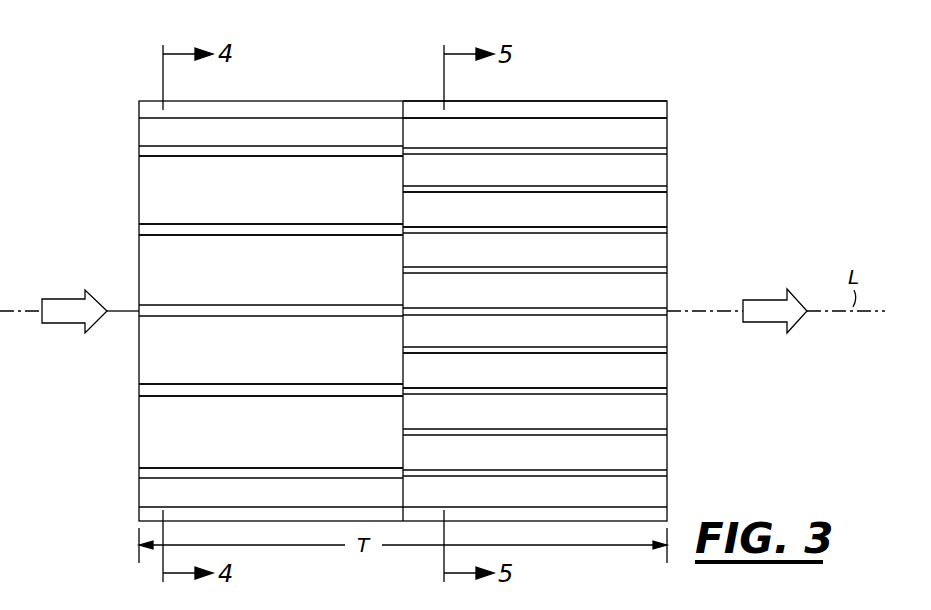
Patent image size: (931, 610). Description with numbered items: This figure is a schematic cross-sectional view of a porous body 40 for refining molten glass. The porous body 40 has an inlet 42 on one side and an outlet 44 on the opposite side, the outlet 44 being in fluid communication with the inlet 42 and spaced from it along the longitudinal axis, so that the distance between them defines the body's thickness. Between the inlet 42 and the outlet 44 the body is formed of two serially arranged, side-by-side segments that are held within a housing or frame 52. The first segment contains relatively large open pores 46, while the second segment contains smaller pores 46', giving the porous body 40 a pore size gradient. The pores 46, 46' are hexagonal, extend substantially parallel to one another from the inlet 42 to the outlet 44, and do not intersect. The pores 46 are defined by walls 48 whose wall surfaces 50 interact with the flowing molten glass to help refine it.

The porous body 40 is at (284, 117).
The inlet 42 is at (139, 192).
The outlet 44 is at (667, 132).
The open pores 46 is at (246, 351).
The pores 46' is at (564, 290).
The walls 48 is at (250, 237).
The wall surfaces 50 is at (271, 270).
The frame 52 is at (617, 100).